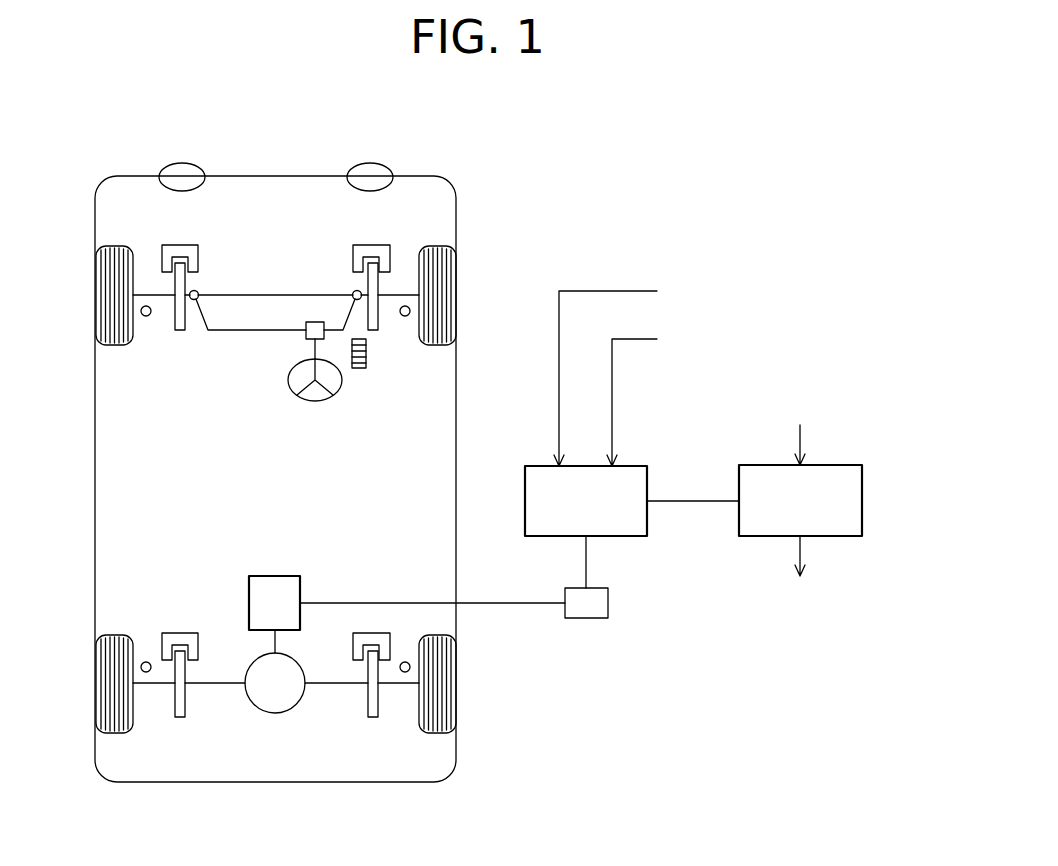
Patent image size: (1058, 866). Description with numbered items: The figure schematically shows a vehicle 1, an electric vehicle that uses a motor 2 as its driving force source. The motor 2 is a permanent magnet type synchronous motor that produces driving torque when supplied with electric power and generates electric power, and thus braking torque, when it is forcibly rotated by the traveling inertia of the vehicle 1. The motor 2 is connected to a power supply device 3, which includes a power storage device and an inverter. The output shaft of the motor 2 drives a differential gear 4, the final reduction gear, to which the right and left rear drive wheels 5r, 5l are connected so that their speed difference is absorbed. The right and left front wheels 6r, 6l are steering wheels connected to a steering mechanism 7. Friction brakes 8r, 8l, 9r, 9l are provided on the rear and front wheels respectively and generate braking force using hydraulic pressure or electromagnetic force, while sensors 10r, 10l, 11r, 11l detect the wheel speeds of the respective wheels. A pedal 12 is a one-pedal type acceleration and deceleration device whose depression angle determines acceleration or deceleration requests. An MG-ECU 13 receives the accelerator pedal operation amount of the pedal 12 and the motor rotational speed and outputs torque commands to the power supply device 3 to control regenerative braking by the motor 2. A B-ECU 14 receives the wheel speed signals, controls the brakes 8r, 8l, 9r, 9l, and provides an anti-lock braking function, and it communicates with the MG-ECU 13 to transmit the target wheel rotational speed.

The vehicle 1 is at (94, 481).
The motor 2 is at (262, 577).
The power supply device 3 is at (583, 618).
The differential gear 4 is at (286, 708).
The left rear wheel 5l is at (102, 711).
The right rear wheel 5r is at (455, 713).
The left front wheel 6l is at (96, 296).
The right front wheel 6r is at (456, 302).
The steering mechanism 7 is at (303, 341).
The brake 8l is at (163, 633).
The brake 8r is at (390, 633).
The brake 9l is at (162, 245).
The brake 9r is at (390, 245).
The sensor 10l is at (146, 673).
The sensor 10r is at (405, 673).
The sensor 11l is at (143, 317).
The sensor 11r is at (405, 316).
The pedal 12 is at (365, 368).
The MG-ECU 13 is at (647, 532).
The B-ECU 14 is at (862, 501).